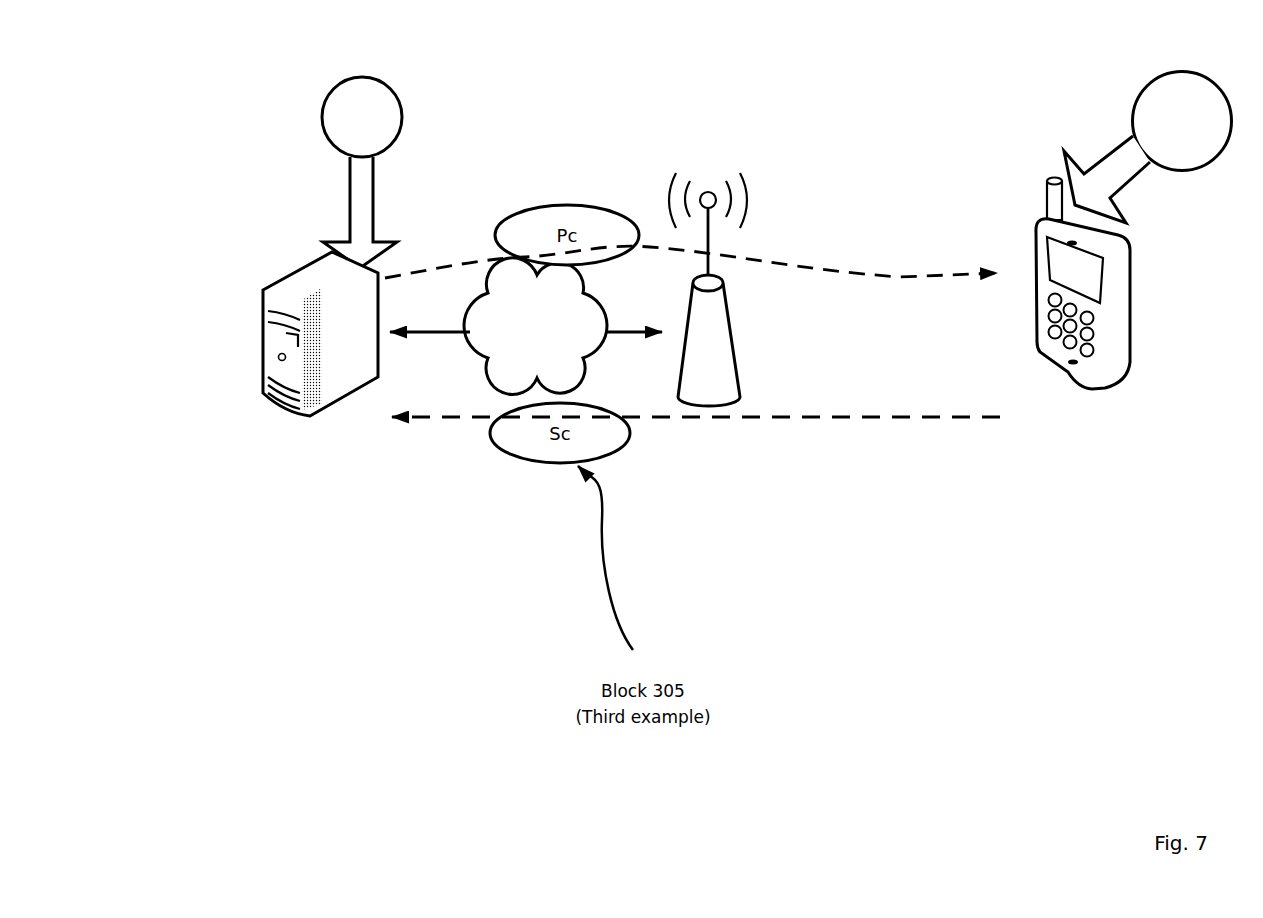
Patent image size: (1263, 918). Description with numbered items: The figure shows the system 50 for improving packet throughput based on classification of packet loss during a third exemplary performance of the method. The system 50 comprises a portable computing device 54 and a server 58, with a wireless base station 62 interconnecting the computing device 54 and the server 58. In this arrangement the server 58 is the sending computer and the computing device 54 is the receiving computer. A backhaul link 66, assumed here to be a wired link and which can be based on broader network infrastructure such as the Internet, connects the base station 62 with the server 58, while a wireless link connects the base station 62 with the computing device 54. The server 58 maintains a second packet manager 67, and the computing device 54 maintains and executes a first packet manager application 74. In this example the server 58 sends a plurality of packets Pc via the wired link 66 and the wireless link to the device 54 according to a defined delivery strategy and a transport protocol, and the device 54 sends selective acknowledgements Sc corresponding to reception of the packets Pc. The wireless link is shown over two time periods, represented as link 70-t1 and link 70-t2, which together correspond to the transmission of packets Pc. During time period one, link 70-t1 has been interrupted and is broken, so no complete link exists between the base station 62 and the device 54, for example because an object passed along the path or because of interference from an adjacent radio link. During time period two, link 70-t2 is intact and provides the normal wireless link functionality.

The system 50 is at (142, 490).
The portable computing device 54 is at (1116, 400).
The server 58 is at (356, 401).
The wireless base station 62 is at (744, 405).
The backhaul link 66 is at (535, 326).
The second packet manager 67 is at (304, 101).
The wireless link at time period one 70-t1 is at (767, 309).
The wireless link at time period two 70-t2 is at (767, 352).
The first packet manager application 74 is at (1137, 94).